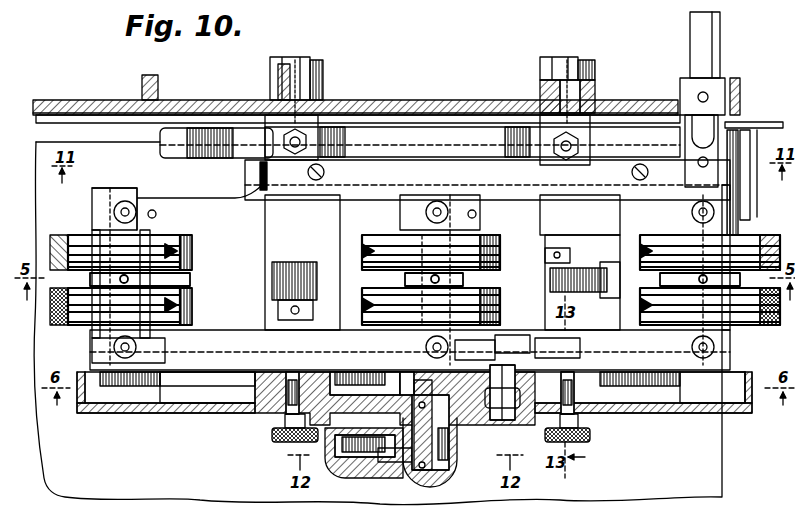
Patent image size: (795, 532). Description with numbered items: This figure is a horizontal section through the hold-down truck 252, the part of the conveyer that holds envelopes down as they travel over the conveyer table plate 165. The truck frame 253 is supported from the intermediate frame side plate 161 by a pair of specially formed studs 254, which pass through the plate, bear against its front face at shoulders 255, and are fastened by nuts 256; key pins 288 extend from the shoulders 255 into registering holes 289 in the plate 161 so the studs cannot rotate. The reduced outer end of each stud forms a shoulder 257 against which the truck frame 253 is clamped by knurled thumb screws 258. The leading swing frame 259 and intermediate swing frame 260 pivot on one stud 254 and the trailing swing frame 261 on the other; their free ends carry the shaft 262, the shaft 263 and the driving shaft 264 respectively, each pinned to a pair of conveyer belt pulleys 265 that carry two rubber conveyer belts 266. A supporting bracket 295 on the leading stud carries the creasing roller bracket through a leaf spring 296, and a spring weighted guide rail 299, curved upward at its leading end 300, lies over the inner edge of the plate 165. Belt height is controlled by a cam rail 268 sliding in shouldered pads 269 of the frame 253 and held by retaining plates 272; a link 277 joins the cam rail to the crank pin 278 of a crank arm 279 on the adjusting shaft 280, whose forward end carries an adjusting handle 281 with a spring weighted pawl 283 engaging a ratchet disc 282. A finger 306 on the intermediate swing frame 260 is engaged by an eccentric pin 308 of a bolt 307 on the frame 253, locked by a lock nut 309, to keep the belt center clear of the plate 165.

The conveyer table plate 165 is at (183, 488).
The intermediate frame side plate 161 is at (368, 104).
The key pins 288 is at (320, 112).
The hold-down truck 252 is at (426, 76).
The supporting studs 254 is at (298, 56).
The nuts 256 is at (322, 66).
The registering holes 289 is at (300, 95).
The shoulders 255 is at (270, 110).
The driving shaft 264 is at (720, 198).
The spring weighted guide rail 299 is at (400, 135).
The leaf spring 296 is at (388, 172).
The upwardly curved leading end 300 is at (178, 150).
The leading swing frame 259 is at (195, 208).
The supporting bracket 295 is at (262, 178).
The intermediate swing frame 260 is at (487, 180).
The shaft 263 is at (443, 199).
The shaft 262 is at (108, 186).
The conveyer belts 266 is at (56, 242).
The conveyer belt pulleys 265 is at (78, 236).
The trailing swing frame 261 is at (635, 257).
The shoulder 257 is at (318, 348).
The finger 306 is at (475, 350).
The eccentric pin 308 is at (512, 344).
The lock nut 309 is at (538, 352).
The truck frame 253 is at (742, 413).
The shouldered pads 269 is at (175, 392).
The cam rail 268 is at (240, 376).
The link 277 is at (395, 401).
The retaining plates 272 is at (287, 418).
The knurled thumb screws 258 is at (285, 442).
The adjusting handle 281 is at (335, 478).
The spring weighted pawl 283 is at (390, 466).
The adjusting shaft 280 is at (450, 470).
The crank arm 279 is at (440, 425).
The crank pin 278 is at (412, 388).
The ratchet disc 282 is at (450, 440).
The bolt 307 is at (512, 410).